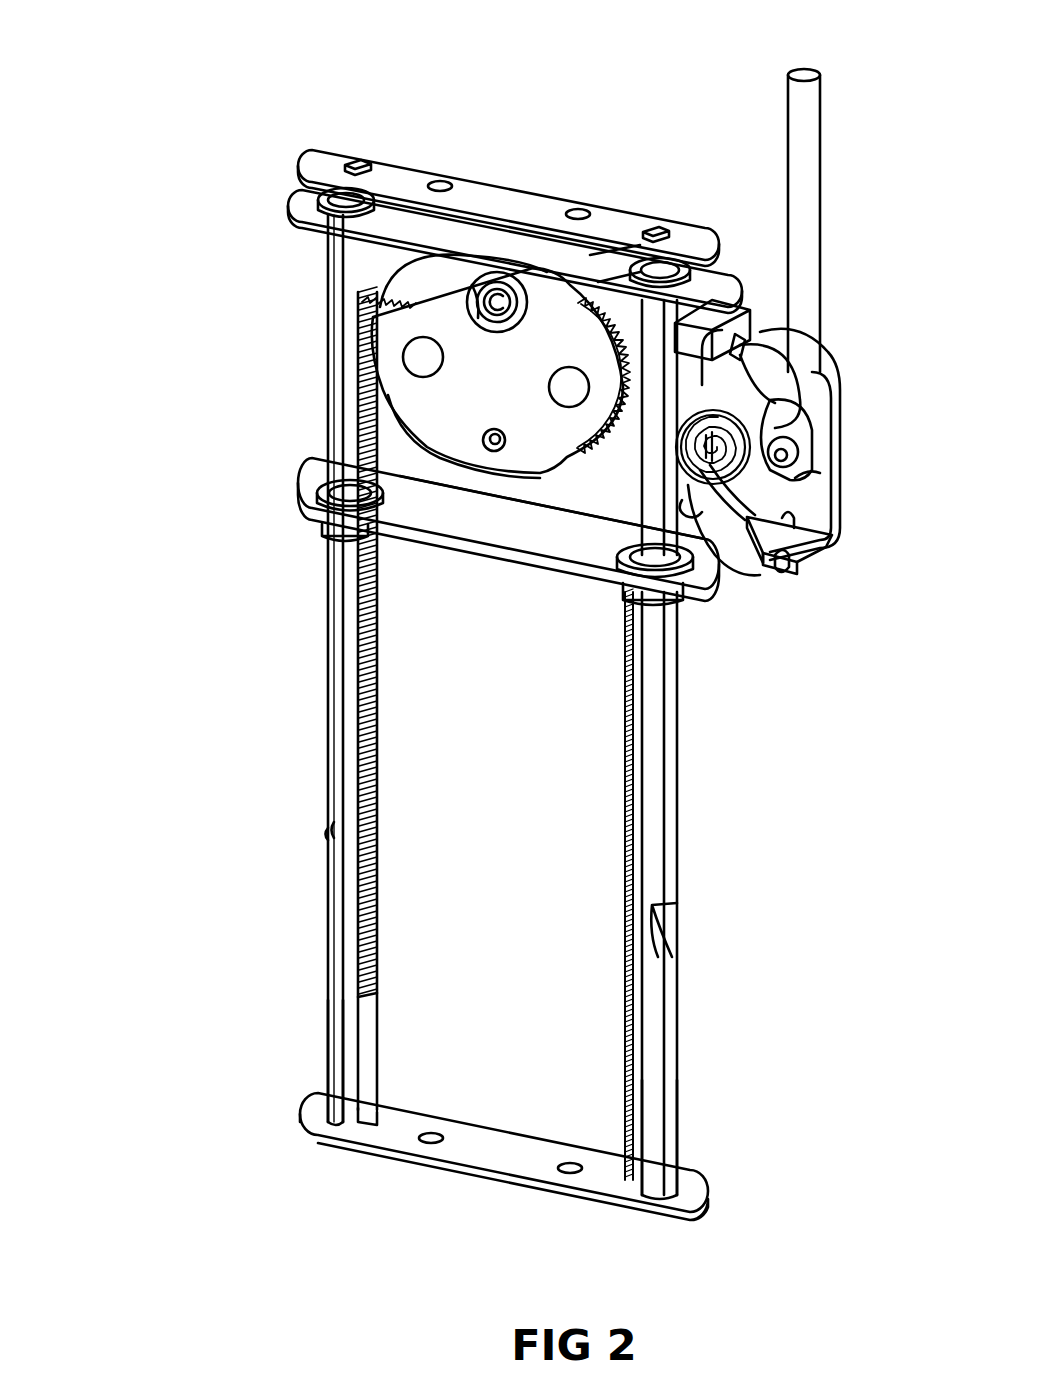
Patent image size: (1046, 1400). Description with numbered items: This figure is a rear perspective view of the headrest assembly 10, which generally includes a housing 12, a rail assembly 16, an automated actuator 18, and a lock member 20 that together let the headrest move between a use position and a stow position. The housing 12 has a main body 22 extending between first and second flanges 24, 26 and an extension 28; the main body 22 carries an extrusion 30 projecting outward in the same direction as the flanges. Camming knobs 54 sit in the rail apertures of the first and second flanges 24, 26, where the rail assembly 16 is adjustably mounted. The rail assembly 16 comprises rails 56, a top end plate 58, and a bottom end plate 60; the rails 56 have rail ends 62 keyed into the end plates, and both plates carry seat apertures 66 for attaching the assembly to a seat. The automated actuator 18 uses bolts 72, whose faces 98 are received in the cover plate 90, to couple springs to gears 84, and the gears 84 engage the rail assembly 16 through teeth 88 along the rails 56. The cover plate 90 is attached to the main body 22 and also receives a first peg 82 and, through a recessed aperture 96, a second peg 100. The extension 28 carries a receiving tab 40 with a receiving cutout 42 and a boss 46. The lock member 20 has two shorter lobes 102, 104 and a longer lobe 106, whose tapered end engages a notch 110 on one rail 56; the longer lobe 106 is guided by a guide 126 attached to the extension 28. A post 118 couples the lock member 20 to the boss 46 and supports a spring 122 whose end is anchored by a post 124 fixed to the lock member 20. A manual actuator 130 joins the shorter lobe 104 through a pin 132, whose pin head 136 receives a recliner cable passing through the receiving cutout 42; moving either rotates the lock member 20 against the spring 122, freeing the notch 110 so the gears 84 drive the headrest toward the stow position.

The headrest assembly 10 is at (175, 110).
The housing 12 is at (843, 350).
The rail assembly 16 is at (194, 708).
The automated actuator 18 is at (604, 295).
The lock member 20 is at (825, 513).
The main body 22 is at (410, 460).
The first flange 24 is at (393, 215).
The second flange 26 is at (528, 528).
The extension 28 is at (808, 540).
The extrusion 30 is at (580, 473).
The receiving tab 40 is at (790, 552).
The receiving cutout 42 is at (793, 570).
The boss 46 is at (785, 413).
The camming knobs 54 is at (730, 243).
The rails 56 is at (327, 1037).
The top end plate 58 is at (512, 197).
The bottom end plate 60 is at (486, 1157).
The rail ends 62 is at (360, 152).
The seat apertures 66 is at (440, 182).
The bolts 72 is at (420, 353).
The first peg 82 is at (495, 447).
The gears 84 is at (377, 285).
The teeth 88 is at (380, 780).
The cover plate 90 is at (450, 427).
The recessed aperture 96 is at (478, 288).
The faces 98 is at (560, 387).
The second peg 100 is at (498, 304).
The shorter lobe 102 is at (722, 495).
The shorter lobe 104 is at (757, 432).
The longer lobe 106 is at (732, 392).
The notch 110 is at (333, 825).
The post 118 is at (713, 450).
The spring 122 is at (737, 500).
The post 124 is at (693, 497).
The guide 126 is at (718, 310).
The manual actuator 130 is at (797, 147).
The pin 132 is at (787, 455).
The pin head 136 is at (803, 468).